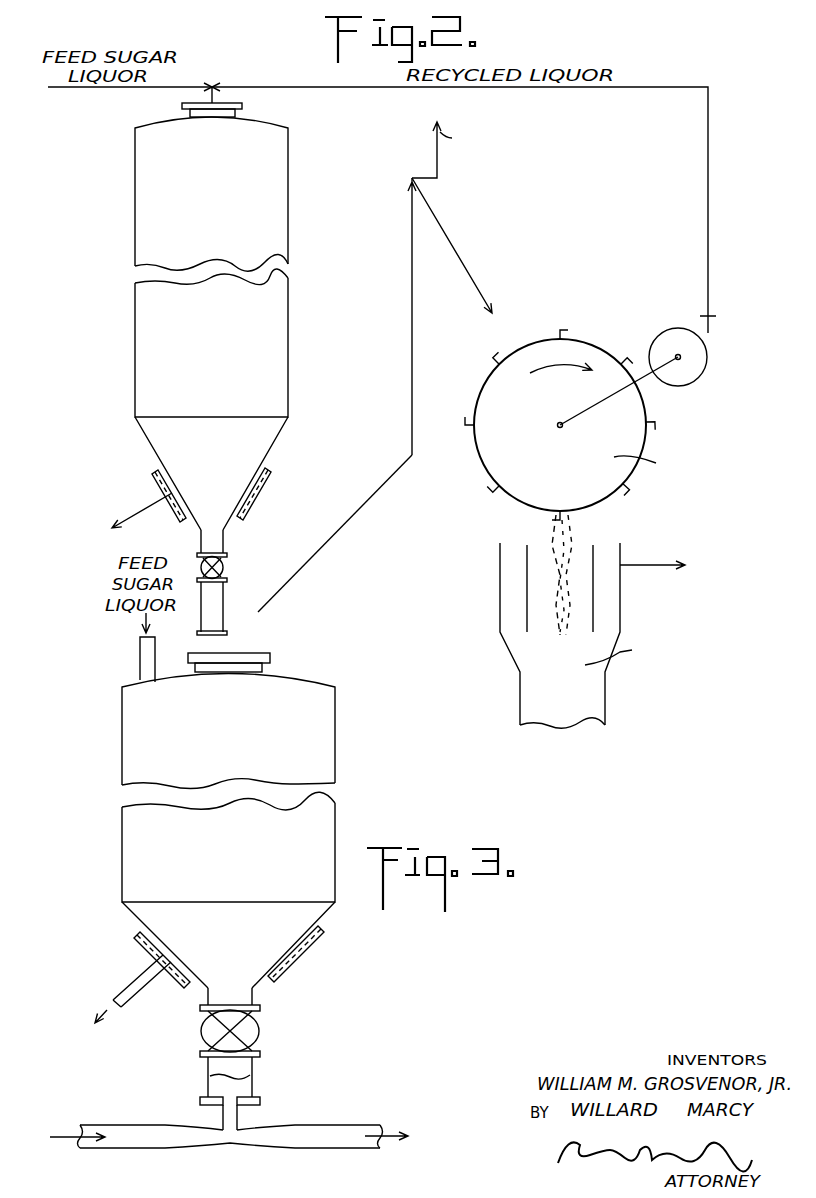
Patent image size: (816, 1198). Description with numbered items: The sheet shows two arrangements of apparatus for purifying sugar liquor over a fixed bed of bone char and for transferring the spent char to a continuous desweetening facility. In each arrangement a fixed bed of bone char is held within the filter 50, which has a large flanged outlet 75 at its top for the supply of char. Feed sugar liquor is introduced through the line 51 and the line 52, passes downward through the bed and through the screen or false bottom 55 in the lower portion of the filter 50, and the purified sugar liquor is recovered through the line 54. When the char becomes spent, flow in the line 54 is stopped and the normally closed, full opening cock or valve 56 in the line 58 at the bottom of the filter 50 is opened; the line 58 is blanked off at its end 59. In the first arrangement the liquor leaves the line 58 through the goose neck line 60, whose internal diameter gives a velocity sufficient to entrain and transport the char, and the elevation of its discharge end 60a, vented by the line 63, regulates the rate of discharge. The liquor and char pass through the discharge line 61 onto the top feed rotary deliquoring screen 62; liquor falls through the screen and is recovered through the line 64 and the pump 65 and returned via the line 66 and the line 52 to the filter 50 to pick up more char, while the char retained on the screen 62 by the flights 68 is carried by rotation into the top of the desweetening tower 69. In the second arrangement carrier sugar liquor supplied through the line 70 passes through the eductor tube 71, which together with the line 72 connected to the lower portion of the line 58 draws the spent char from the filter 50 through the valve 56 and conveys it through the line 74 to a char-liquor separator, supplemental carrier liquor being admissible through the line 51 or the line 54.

In FIG. 2, the filter 50 is at (290, 208).
In FIG. 3, the filter 50 is at (337, 752).
In FIG. 2, the line 51 is at (60, 88).
In FIG. 3, the line 51 is at (140, 648).
In FIG. 2, the line 52 is at (218, 90).
In FIG. 2, the line 54 is at (136, 513).
In FIG. 3, the line 54 is at (122, 1003).
In FIG. 2, the screen or false bottom 55 is at (178, 486).
In FIG. 3, the screen or false bottom 55 is at (162, 956).
In FIG. 2, the cock or valve 56 is at (224, 562).
In FIG. 3, the cock or valve 56 is at (258, 1036).
In FIG. 2, the line 58 is at (226, 537).
In FIG. 3, the line 58 is at (255, 997).
In FIG. 2, the end 59 is at (225, 636).
In FIG. 2, the goose neck line 60 is at (212, 612).
In FIG. 2, the discharge end 60a is at (410, 182).
In FIG. 2, the discharge line 61 is at (482, 297).
In FIG. 2, the top feed rotary deliquoring screen 62 is at (648, 402).
In FIG. 2, the line 63 is at (440, 163).
In FIG. 2, the line 64 is at (585, 412).
In FIG. 2, the pump 65 is at (708, 370).
In FIG. 2, the line 66 is at (396, 89).
In FIG. 2, the flights 68 is at (560, 330).
In FIG. 2, the desweetening tower 69 is at (605, 720).
In FIG. 2, the line 70 is at (645, 570).
In FIG. 3, the line 70 is at (113, 1125).
In FIG. 3, the eductor tube 71 is at (213, 1148).
In FIG. 3, the line 72 is at (222, 1113).
In FIG. 3, the line 74 is at (320, 1148).
In FIG. 2, the flanged outlet 75 is at (237, 113).
In FIG. 3, the flanged outlet 75 is at (270, 668).